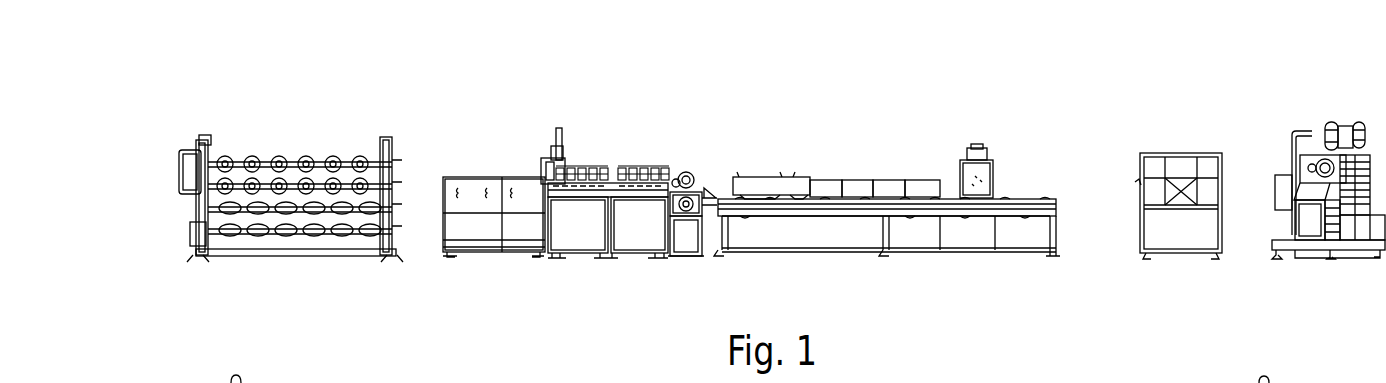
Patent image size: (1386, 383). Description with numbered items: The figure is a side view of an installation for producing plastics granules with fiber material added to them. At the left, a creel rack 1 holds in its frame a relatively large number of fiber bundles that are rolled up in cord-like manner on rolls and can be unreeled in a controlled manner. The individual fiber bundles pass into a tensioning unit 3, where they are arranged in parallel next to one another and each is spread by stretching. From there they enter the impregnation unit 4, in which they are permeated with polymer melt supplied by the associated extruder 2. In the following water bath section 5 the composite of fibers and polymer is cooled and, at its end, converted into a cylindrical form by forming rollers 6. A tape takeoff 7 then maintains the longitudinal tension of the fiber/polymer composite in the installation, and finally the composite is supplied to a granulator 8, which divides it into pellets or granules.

The creel rack 1 is at (285, 178).
The extruder 2 is at (467, 190).
The tensioning unit 3 is at (620, 210).
The impregnation unit 4 is at (690, 175).
The water bath section 5 is at (828, 218).
The forming rollers 6 is at (997, 154).
The tape takeoff 7 is at (1180, 168).
The granulator 8 is at (1320, 155).